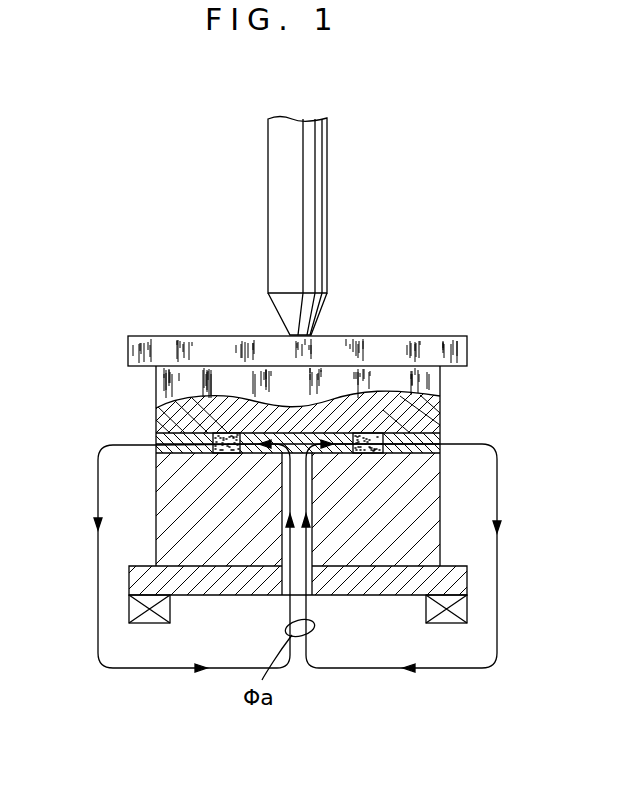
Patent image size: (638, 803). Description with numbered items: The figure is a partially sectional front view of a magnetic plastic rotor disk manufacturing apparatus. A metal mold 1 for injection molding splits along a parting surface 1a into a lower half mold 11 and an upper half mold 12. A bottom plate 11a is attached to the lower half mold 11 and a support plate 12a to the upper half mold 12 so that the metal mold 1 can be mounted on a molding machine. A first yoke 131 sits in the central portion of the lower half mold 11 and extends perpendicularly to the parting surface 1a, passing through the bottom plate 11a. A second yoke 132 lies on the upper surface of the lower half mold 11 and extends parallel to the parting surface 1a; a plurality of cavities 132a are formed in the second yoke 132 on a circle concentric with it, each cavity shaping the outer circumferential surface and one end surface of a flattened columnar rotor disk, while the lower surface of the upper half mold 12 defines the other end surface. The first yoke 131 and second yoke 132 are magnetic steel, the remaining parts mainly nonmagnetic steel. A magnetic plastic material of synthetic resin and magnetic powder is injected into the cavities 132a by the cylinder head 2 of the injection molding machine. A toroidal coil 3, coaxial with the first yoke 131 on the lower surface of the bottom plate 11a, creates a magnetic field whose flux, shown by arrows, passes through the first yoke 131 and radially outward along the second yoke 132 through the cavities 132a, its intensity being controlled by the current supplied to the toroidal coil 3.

The cylinder head 2 is at (322, 245).
The support plate 12a is at (418, 345).
The upper half mold 12 is at (443, 386).
The metal mold 1 is at (483, 425).
The cavities 132a is at (200, 418).
The parting surface 1a is at (162, 426).
The second yoke 132 is at (158, 468).
The lower half mold 11 is at (430, 523).
The first yoke 131 is at (312, 527).
The bottom plate 11a is at (460, 582).
The toroidal coil 3 is at (460, 612).